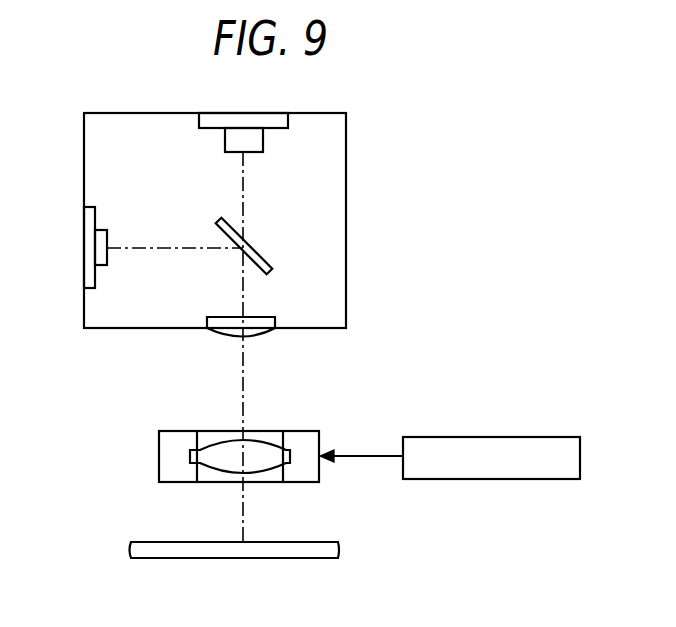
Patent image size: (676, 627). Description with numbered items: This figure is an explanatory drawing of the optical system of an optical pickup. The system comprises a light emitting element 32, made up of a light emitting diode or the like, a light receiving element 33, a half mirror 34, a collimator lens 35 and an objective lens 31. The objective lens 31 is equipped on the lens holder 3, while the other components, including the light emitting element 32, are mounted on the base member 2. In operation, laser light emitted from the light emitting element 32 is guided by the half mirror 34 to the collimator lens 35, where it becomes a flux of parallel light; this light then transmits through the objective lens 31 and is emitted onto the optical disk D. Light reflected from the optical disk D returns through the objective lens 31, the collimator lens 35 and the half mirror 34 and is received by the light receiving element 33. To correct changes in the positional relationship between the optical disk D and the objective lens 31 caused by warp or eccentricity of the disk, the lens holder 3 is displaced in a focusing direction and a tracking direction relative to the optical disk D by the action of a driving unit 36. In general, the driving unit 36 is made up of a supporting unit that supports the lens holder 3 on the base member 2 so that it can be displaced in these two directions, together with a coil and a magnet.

The base member 2 is at (346, 228).
The lens holder 3 is at (310, 431).
The objective lens 31 is at (248, 445).
The light emitting element 32 is at (107, 232).
The light receiving element 33 is at (263, 140).
The half mirror 34 is at (260, 256).
The collimator lens 35 is at (262, 333).
The driving unit 36 is at (490, 437).
The optical disk D is at (313, 543).